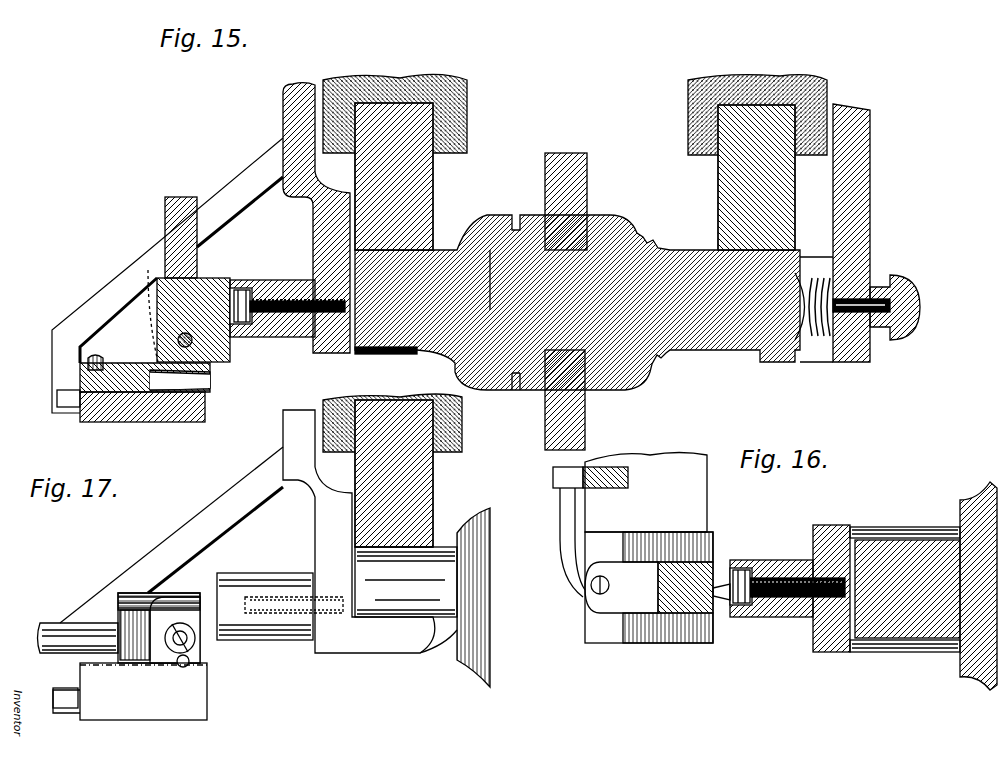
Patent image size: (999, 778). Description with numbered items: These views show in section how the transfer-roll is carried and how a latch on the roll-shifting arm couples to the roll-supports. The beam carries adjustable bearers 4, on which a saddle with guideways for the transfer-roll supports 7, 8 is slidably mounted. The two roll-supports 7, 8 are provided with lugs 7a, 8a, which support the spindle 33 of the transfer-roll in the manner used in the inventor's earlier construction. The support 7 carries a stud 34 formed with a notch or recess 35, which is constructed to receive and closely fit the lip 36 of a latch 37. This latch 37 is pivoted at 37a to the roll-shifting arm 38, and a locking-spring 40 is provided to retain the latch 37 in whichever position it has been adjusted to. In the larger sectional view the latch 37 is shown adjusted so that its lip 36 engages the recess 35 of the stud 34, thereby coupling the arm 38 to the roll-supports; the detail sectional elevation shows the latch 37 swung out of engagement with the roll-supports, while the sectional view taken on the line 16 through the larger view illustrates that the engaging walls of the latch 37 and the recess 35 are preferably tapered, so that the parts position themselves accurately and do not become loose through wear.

In FIG. 15, the adjustable bearers 4 is at (727, 176).
In FIG. 17, the adjustable bearers 4 is at (418, 490).
In FIG. 15, the transfer-roll support 7 is at (283, 110).
In FIG. 17, the transfer-roll support 7 is at (283, 436).
In FIG. 16, the transfer-roll support 7 is at (835, 525).
In FIG. 17, the lug 7a is at (412, 640).
In FIG. 16, the lug 7a is at (908, 530).
In FIG. 15, the transfer-roll support 8 is at (862, 160).
In FIG. 15, the lug 8a is at (823, 355).
In FIG. 15, the section line 16 16 is at (488, 215).
In FIG. 15, the spindle 33 is at (722, 345).
In FIG. 15, the stud 34 is at (302, 330).
In FIG. 17, the stud 34 is at (300, 618).
In FIG. 16, the stud 34 is at (800, 618).
In FIG. 17, the notch or recess 35 is at (236, 598).
In FIG. 16, the notch or recess 35 is at (728, 617).
In FIG. 15, the lip 36 is at (228, 282).
In FIG. 17, the lip 36 is at (122, 598).
In FIG. 16, the lip 36 is at (722, 575).
In FIG. 15, the latch 37 is at (207, 283).
In FIG. 17, the latch 37 is at (168, 600).
In FIG. 16, the latch 37 is at (700, 563).
In FIG. 15, the pivot 37a is at (190, 342).
In FIG. 15, the roll-shifting arm 38 is at (130, 415).
In FIG. 17, the roll-shifting arm 38 is at (157, 713).
In FIG. 16, the roll-shifting arm 38 is at (652, 466).
In FIG. 15, the locking-spring 40 is at (153, 364).
In FIG. 17, the locking-spring 40 is at (80, 665).
In FIG. 16, the locking-spring 40 is at (610, 606).